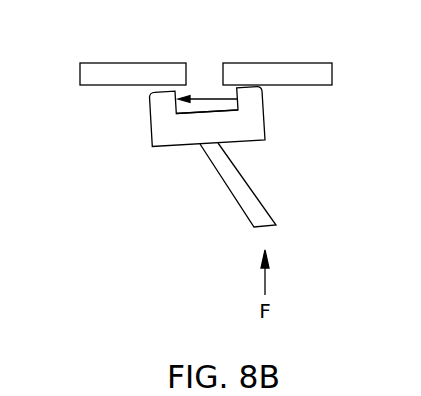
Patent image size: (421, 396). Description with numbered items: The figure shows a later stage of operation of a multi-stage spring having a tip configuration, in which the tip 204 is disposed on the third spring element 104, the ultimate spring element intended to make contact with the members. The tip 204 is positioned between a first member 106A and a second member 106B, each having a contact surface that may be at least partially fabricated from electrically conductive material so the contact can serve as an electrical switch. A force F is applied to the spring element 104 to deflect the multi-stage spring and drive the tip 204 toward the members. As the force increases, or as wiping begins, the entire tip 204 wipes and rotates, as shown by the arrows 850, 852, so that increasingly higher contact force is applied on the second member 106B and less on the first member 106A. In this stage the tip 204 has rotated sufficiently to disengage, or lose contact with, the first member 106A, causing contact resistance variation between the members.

The third spring element 104 is at (252, 188).
The tip 204 is at (151, 128).
The first member 106A is at (120, 86).
The second member 106B is at (293, 86).
The arrow 850 is at (203, 95).
The arrow 852 is at (214, 99).